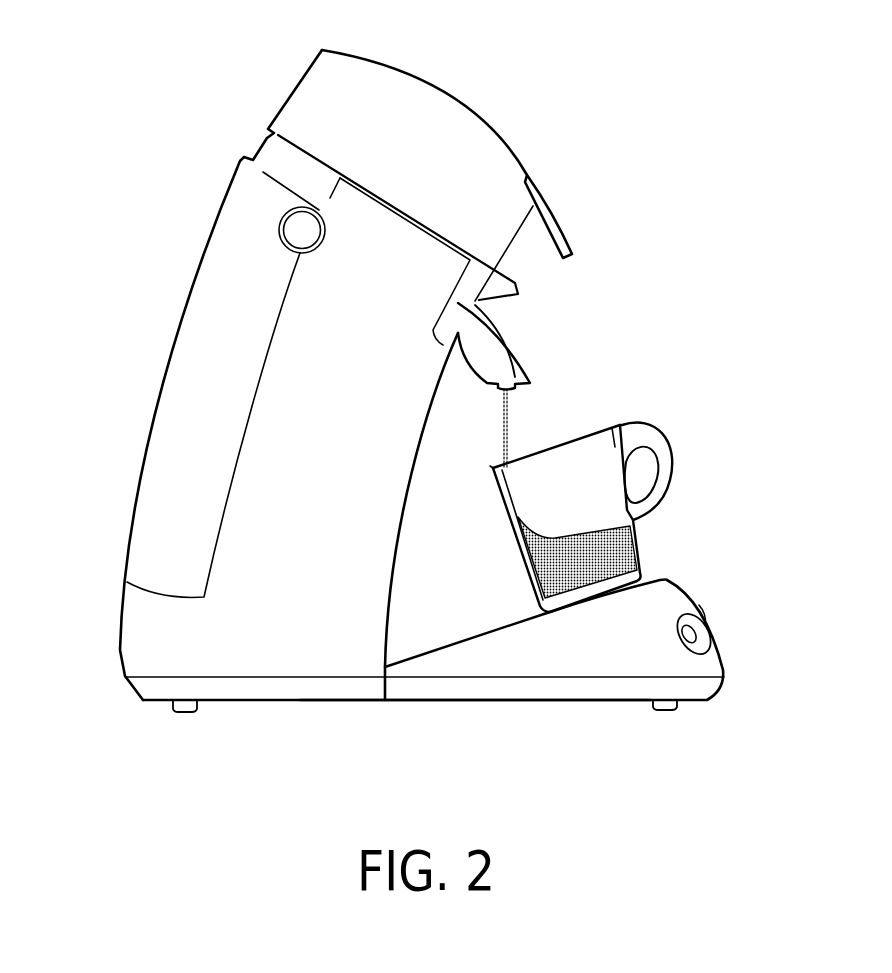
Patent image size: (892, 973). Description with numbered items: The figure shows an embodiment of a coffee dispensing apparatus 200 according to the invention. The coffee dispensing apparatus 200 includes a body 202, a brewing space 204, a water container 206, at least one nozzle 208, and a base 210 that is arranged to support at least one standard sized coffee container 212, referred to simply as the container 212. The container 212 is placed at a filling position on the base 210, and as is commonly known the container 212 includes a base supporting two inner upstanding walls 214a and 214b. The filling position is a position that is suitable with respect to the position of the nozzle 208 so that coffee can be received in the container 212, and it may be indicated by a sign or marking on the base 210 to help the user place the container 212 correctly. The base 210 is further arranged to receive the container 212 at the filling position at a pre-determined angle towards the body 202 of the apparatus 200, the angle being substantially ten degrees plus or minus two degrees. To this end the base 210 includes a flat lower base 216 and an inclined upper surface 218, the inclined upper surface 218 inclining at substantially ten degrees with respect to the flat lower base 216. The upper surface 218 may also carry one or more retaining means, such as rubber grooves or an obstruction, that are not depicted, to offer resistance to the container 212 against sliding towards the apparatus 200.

The coffee dispensing apparatus 200 is at (652, 176).
The body 202 is at (227, 649).
The brewing space 204 is at (449, 93).
The water container 206 is at (188, 365).
The nozzle 208 is at (515, 352).
The base 210 is at (624, 714).
The container 212 is at (680, 438).
The inner upstanding wall 214a is at (491, 474).
The inner upstanding wall 214b is at (616, 440).
The flat lower base 216 is at (480, 702).
The inclined upper surface 218 is at (485, 628).